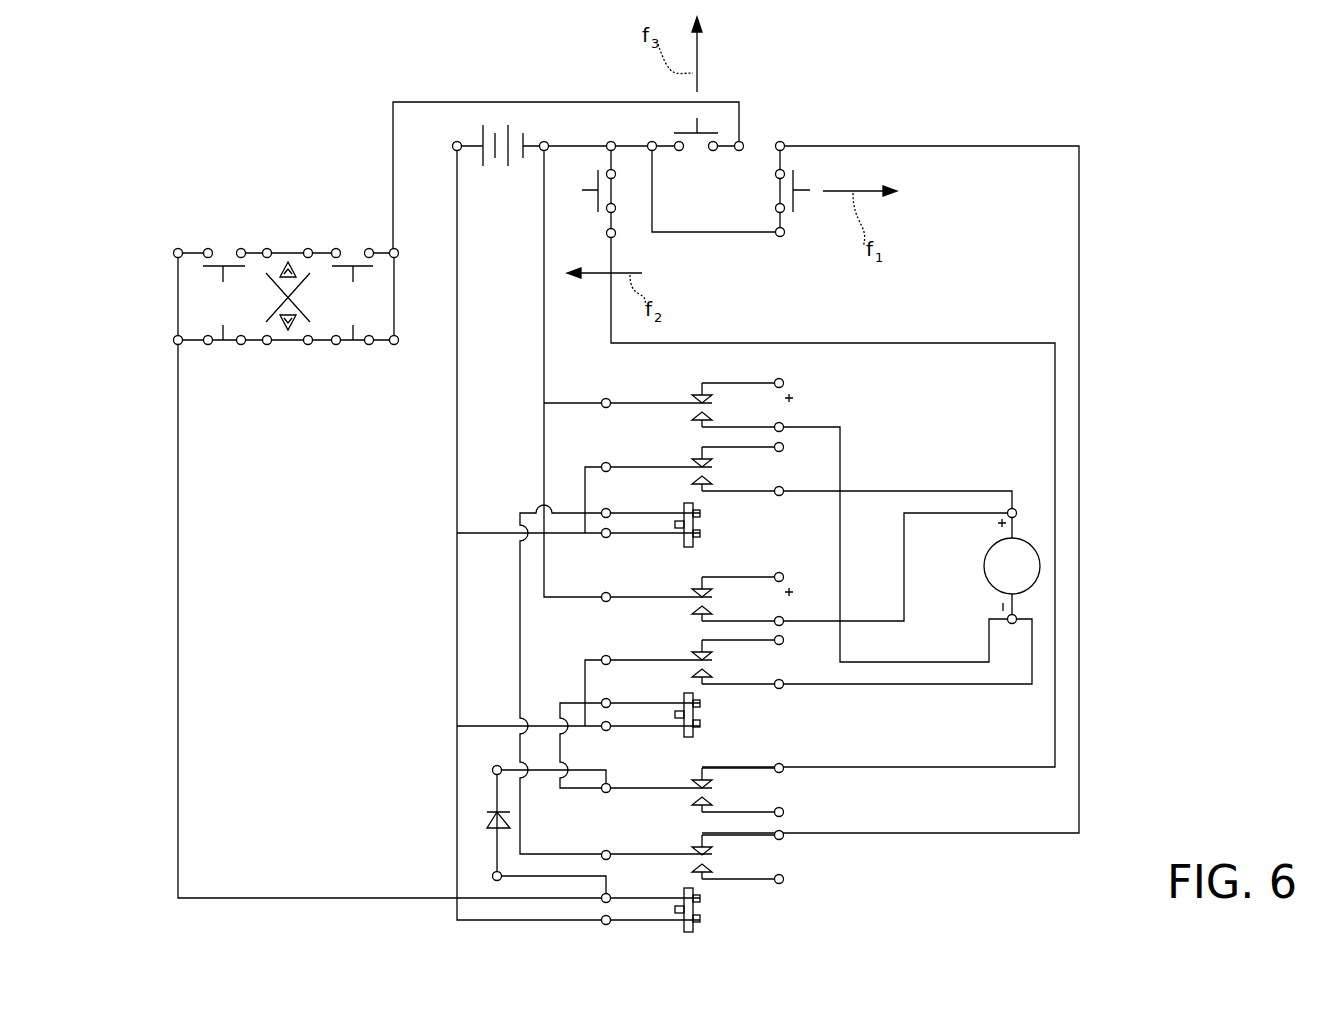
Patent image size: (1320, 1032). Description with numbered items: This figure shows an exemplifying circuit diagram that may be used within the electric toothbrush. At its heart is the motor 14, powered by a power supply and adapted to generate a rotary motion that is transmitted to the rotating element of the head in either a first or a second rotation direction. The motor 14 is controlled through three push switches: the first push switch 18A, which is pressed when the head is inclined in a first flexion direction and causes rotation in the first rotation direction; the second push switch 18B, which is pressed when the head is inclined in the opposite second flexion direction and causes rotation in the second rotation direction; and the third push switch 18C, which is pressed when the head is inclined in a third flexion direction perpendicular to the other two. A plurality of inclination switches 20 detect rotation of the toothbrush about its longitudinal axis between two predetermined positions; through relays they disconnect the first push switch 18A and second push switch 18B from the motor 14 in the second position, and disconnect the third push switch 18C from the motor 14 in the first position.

The motor 14 is at (1038, 570).
The first push switch 18A is at (795, 173).
The second push switch 18B is at (597, 173).
The third push switch 18C is at (710, 128).
The inclination switches 20 is at (353, 342).